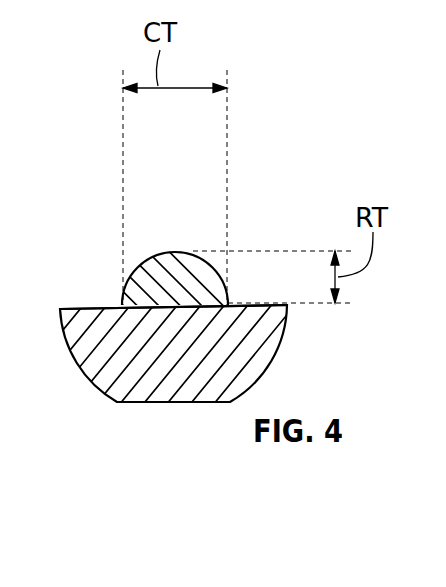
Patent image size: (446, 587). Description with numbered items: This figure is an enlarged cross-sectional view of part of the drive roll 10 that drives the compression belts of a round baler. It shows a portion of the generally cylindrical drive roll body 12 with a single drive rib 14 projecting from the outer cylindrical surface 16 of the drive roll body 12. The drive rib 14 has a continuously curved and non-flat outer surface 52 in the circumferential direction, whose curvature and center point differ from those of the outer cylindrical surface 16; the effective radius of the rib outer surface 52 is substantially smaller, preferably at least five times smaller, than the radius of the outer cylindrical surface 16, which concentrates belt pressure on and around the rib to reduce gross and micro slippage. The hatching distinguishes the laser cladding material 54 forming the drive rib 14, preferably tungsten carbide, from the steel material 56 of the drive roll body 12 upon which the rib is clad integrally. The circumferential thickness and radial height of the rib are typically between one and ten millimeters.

The drive roll 10 is at (166, 342).
The drive roll body 12 is at (166, 319).
The drive rib 14 is at (187, 239).
The outer cylindrical surface 16 is at (70, 306).
The outer surface 52 is at (214, 262).
The laser cladding material 54 is at (205, 278).
The steel material 56 is at (247, 365).